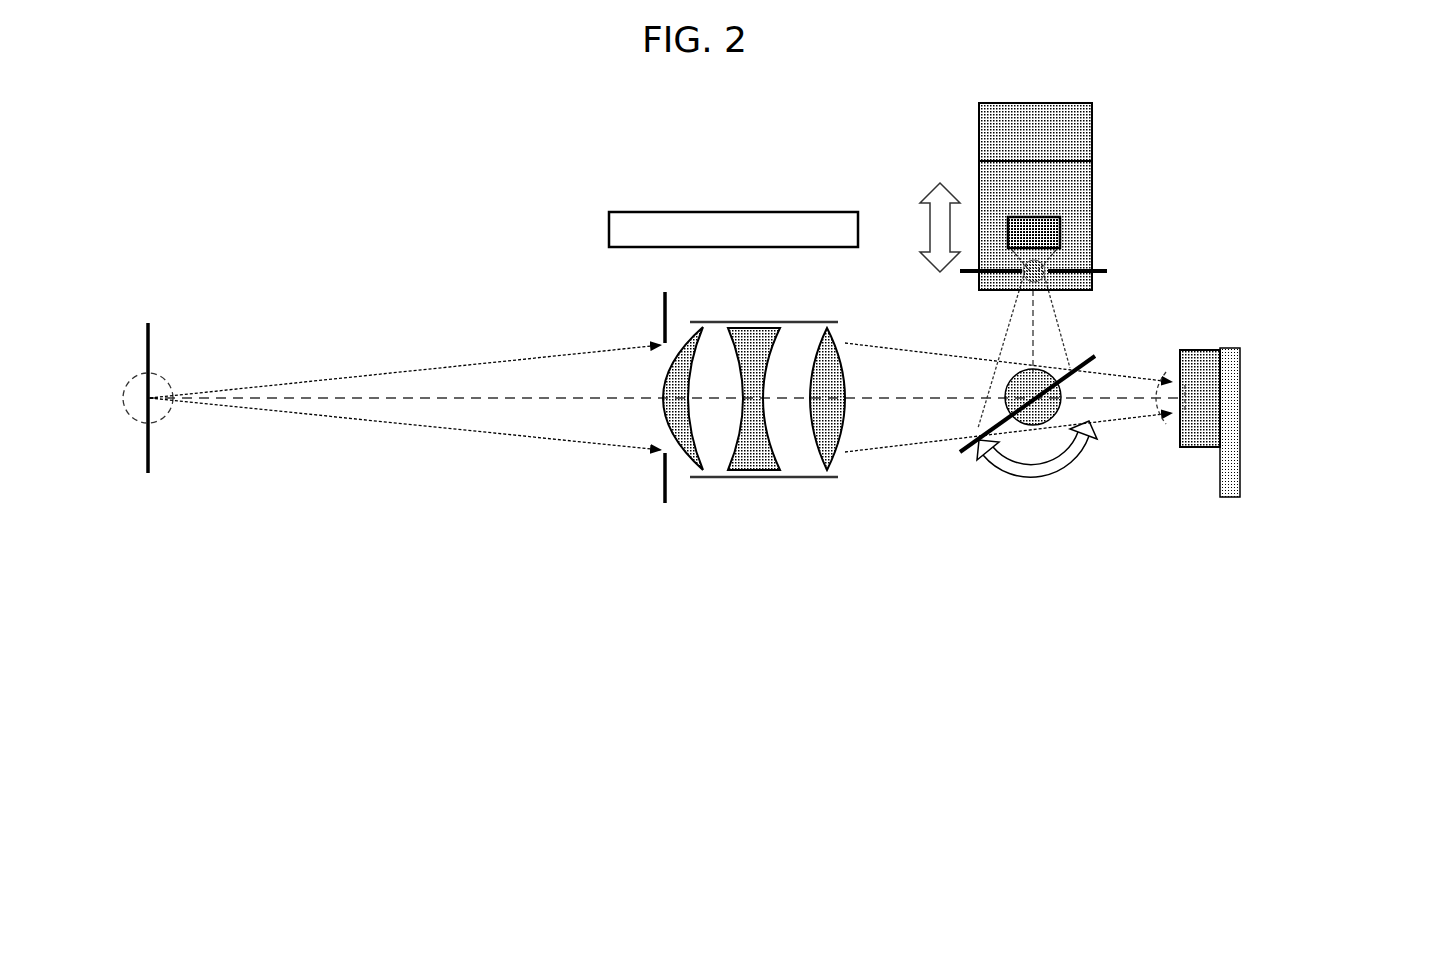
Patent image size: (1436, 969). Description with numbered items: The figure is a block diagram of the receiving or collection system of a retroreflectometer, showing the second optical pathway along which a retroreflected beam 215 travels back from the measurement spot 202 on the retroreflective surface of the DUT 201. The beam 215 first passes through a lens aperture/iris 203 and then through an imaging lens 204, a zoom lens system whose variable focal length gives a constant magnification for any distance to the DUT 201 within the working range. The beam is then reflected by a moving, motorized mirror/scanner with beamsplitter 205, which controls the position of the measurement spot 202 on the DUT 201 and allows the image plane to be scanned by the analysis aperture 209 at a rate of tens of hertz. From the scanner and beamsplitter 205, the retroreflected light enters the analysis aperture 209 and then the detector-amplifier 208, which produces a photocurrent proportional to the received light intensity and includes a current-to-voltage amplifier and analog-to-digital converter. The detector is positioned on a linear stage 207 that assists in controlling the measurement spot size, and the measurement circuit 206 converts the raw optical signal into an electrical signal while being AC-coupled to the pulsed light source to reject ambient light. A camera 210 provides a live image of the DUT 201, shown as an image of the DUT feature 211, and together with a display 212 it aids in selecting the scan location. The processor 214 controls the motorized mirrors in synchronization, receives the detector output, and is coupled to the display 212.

The DUT 201 is at (163, 306).
The measurement spot 202 is at (283, 439).
The lens aperture/iris 203 is at (485, 454).
The imaging lens 204 is at (855, 430).
The motorized mirror/scanner and beamsplitter 205 is at (936, 484).
The measurement circuit 206 is at (1186, 125).
The linear stage 207 is at (1131, 215).
The detector-amplifier 208 is at (1200, 215).
The analysis aperture 209 is at (1176, 254).
The camera 210 is at (1304, 370).
The image of the DUT feature 211 is at (1262, 471).
The display 212 is at (1321, 422).
The processor 214 is at (788, 176).
The retroreflected beam 215 is at (341, 377).